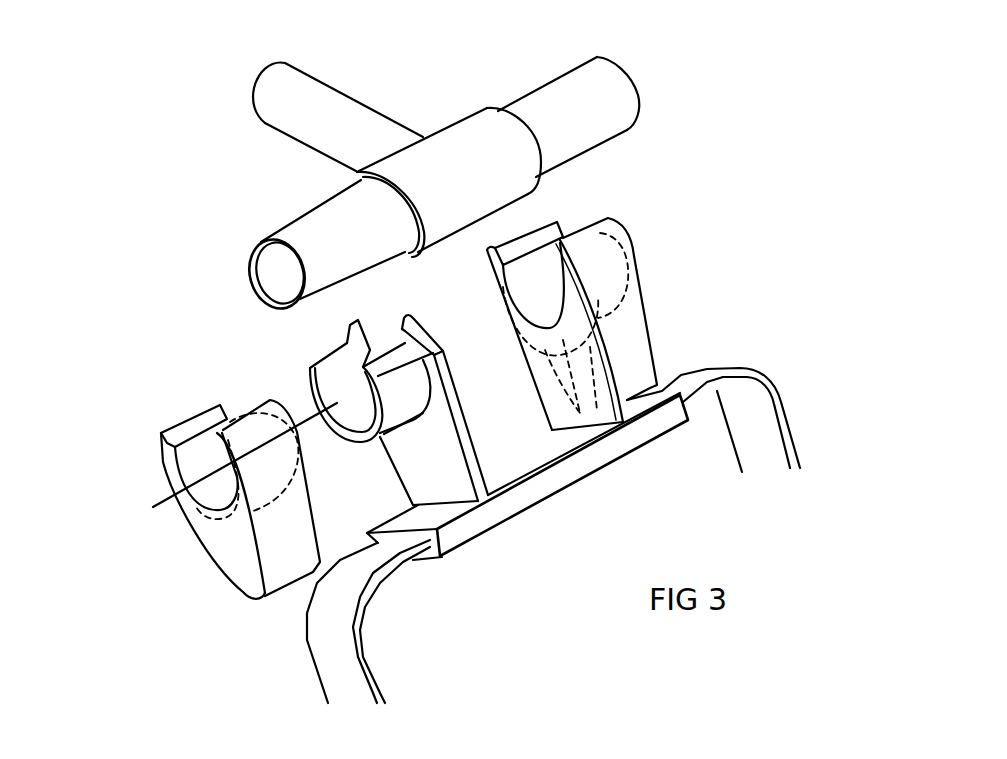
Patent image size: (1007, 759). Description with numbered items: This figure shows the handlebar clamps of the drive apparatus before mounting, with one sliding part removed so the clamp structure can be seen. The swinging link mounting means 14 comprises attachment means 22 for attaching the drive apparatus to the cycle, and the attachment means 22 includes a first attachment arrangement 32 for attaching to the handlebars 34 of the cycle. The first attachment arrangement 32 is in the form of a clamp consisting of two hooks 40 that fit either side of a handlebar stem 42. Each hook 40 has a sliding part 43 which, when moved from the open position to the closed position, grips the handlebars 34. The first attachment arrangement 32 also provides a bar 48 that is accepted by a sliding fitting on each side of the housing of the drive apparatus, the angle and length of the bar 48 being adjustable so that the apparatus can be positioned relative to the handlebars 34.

The swinging link mounting means 14 is at (539, 478).
The attachment means 22 is at (643, 220).
The first attachment arrangement 32 is at (568, 478).
The handlebars 34 is at (555, 107).
The hook 40 is at (333, 378).
The handlebar stem 42 is at (340, 130).
The sliding part 43 is at (630, 333).
The bar 48 is at (752, 435).